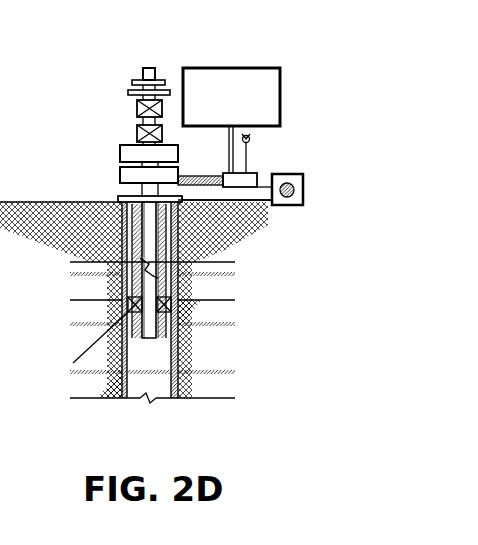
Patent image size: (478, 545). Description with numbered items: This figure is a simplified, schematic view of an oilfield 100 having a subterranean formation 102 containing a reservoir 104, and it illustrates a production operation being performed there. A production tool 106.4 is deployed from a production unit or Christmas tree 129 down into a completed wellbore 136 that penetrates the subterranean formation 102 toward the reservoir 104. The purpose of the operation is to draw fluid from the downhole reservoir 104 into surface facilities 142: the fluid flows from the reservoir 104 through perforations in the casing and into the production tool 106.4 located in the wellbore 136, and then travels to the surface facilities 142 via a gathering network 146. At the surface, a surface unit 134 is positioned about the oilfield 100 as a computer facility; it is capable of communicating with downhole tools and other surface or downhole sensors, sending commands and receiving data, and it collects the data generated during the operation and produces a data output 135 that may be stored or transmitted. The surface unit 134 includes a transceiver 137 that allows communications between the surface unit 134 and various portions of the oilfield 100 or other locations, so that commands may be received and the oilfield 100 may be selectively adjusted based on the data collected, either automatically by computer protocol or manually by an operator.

The oilfield 100 is at (68, 110).
The subterranean formation 102 is at (246, 306).
The reservoir 104 is at (228, 361).
The production tool 106.4 is at (125, 323).
The Christmas tree 129 is at (146, 67).
The surface unit 134 is at (223, 181).
The data output 135 is at (252, 67).
The completed wellbore 136 is at (172, 238).
The transceiver 137 is at (248, 154).
The surface facilities 142 is at (303, 192).
The gathering network 146 is at (266, 192).